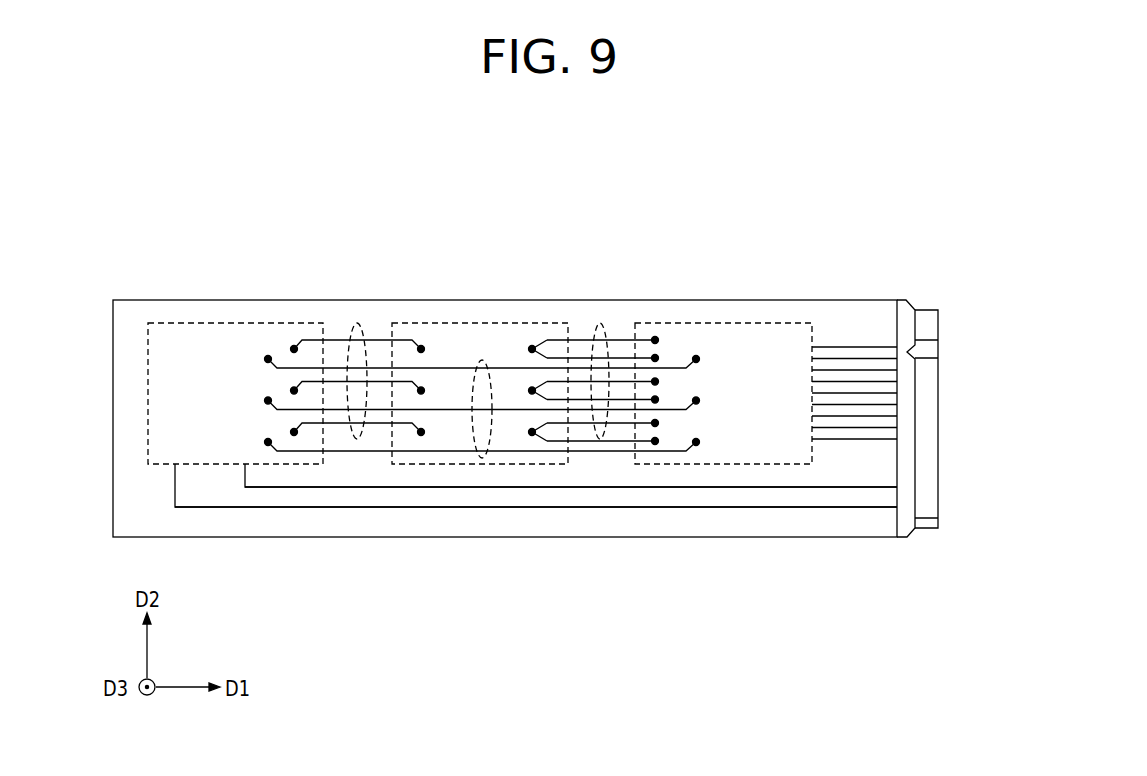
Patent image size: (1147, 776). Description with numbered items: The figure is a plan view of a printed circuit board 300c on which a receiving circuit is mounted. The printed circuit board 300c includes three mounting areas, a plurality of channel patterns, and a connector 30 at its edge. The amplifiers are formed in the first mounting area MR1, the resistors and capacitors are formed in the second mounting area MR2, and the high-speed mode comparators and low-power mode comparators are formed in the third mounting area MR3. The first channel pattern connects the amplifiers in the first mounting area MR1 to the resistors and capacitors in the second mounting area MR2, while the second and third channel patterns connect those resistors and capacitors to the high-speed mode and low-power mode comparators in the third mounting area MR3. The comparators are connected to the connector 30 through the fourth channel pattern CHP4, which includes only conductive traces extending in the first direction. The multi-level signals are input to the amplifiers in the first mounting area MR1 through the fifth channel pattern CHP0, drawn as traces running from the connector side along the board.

The printed circuit board 300c is at (562, 196).
The connector 30 is at (922, 310).
The first mounting area MR1 is at (214, 322).
The second mounting area MR2 is at (478, 322).
The third mounting area MR3 is at (756, 322).
The fourth channel pattern CHP4 is at (840, 347).
The fifth channel pattern CHP0 is at (733, 510).